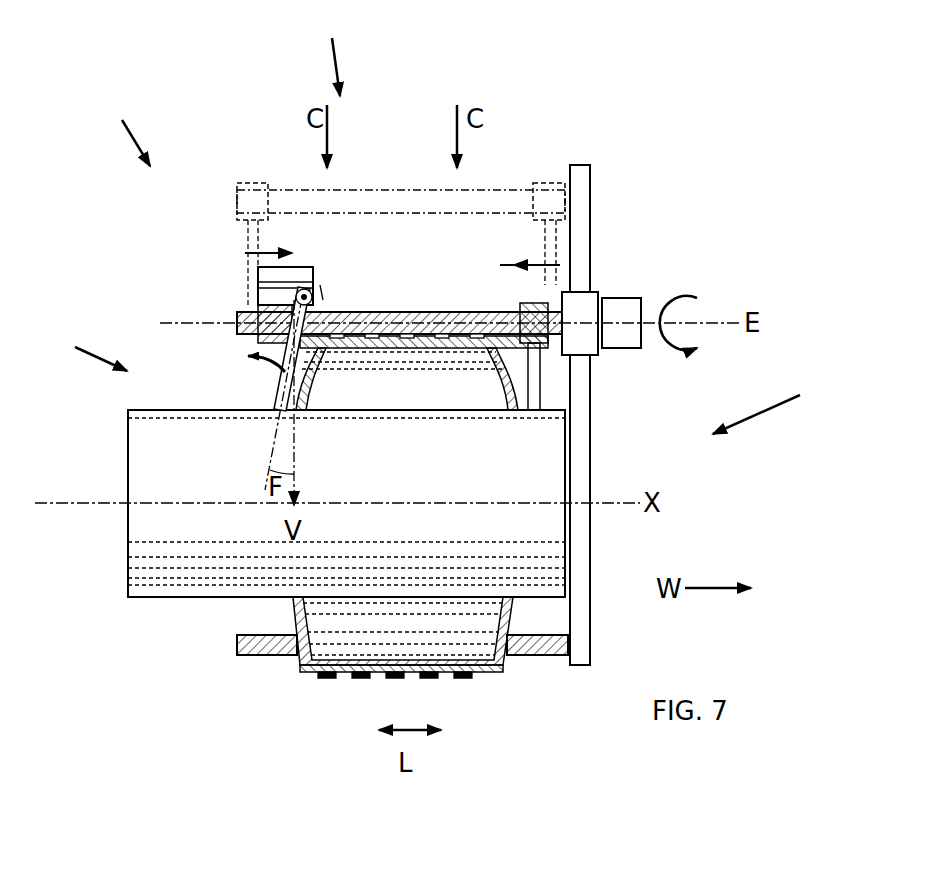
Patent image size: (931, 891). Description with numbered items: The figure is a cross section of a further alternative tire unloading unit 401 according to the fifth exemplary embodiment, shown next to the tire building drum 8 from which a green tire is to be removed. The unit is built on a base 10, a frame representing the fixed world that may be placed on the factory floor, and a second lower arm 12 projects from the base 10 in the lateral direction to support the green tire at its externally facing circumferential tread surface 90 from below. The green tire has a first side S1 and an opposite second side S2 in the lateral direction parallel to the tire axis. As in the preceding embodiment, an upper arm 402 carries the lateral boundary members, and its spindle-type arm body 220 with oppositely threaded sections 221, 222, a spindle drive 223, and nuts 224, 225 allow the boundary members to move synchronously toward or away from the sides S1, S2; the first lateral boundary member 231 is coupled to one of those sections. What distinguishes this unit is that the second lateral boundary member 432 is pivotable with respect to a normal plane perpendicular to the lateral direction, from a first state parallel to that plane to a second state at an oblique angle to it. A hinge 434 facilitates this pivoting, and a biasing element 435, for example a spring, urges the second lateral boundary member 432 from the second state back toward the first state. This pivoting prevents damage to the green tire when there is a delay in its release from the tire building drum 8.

The tire building drum 8 is at (140, 528).
The base 10 is at (585, 178).
The second lower arm 12 is at (530, 655).
The tread surface 90 is at (314, 675).
The pivoting direction 220 is at (252, 338).
The strip 221 is at (400, 338).
The plate 222 is at (350, 318).
The hub 223 is at (622, 302).
The slide 224 is at (524, 300).
The hub block 225 is at (258, 300).
The rod 231 is at (536, 384).
The further alternative tire unloading unit 401 is at (125, 125).
The second assembly 402 is at (335, 51).
The second lateral boundary member 432 is at (280, 392).
The hinge 434 is at (312, 265).
The biasing element 435 is at (258, 290).
The first side S1 is at (776, 403).
The second side S2 is at (82, 347).